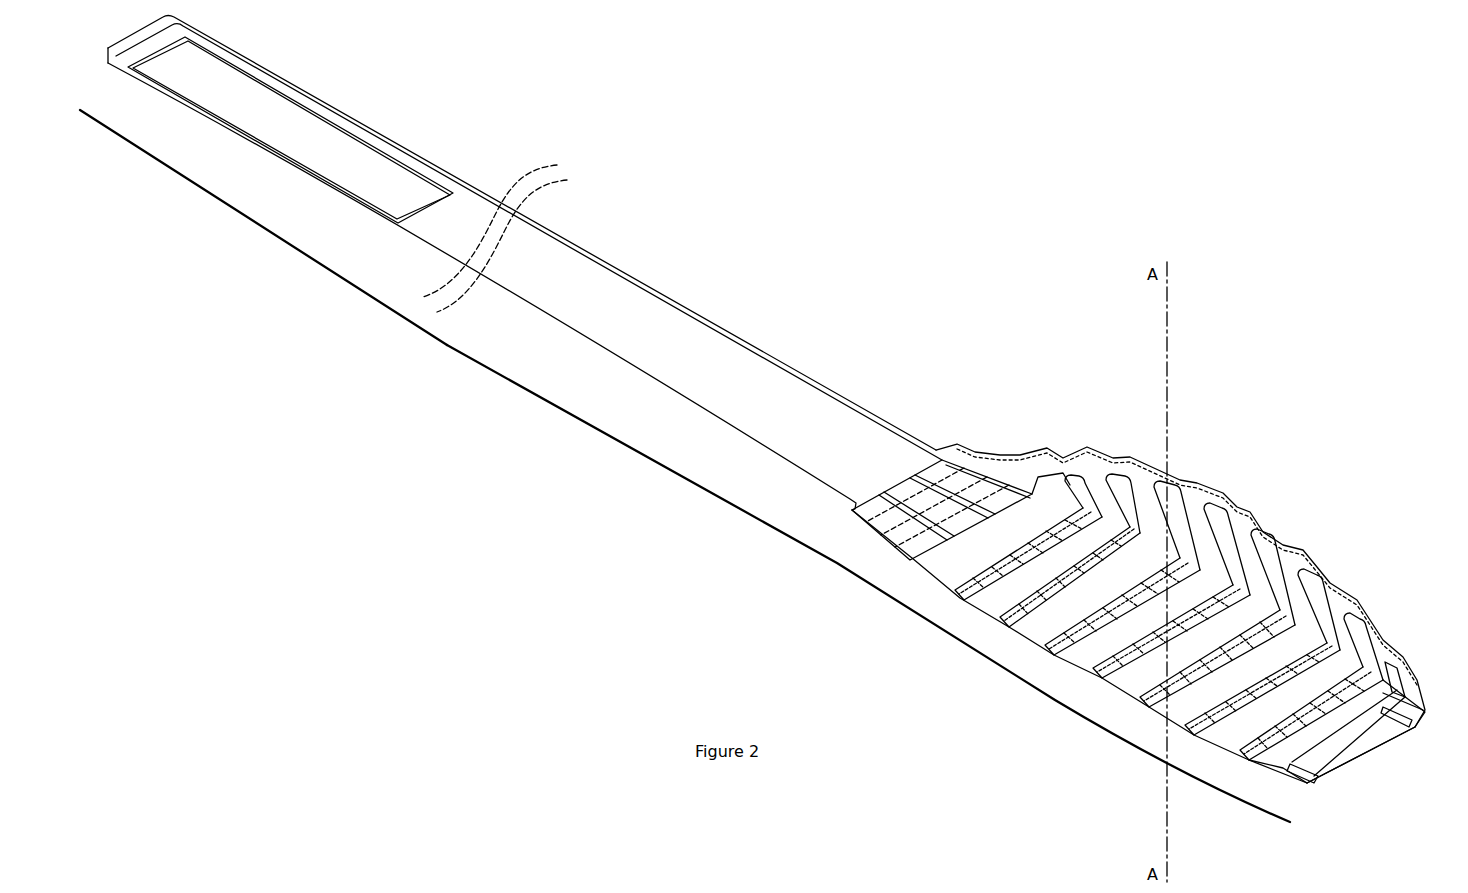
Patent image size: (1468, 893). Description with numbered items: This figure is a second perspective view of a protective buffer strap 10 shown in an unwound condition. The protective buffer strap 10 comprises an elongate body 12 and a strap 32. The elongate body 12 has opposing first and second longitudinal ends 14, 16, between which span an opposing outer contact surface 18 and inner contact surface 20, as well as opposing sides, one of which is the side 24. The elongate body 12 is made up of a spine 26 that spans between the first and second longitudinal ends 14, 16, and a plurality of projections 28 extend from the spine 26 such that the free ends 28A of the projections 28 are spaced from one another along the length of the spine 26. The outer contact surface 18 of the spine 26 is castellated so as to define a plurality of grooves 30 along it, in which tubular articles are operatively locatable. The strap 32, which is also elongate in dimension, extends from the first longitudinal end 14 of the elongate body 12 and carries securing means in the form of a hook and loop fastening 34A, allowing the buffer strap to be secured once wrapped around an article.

The protective buffer strap 10 is at (1217, 254).
The elongate body 12 is at (699, 435).
The first longitudinal end 14 is at (932, 445).
The second longitudinal end 16 is at (1393, 742).
The outer contact surface 18 is at (1150, 462).
The inner contact surface 20 is at (1370, 756).
The side 24 is at (1328, 538).
The spine 26 is at (1208, 489).
The projections 28 is at (1103, 492).
The free ends 28A is at (1145, 530).
The grooves 30 is at (1237, 507).
The strap 32 is at (267, 240).
The hook and loop fastening 34A is at (378, 170).